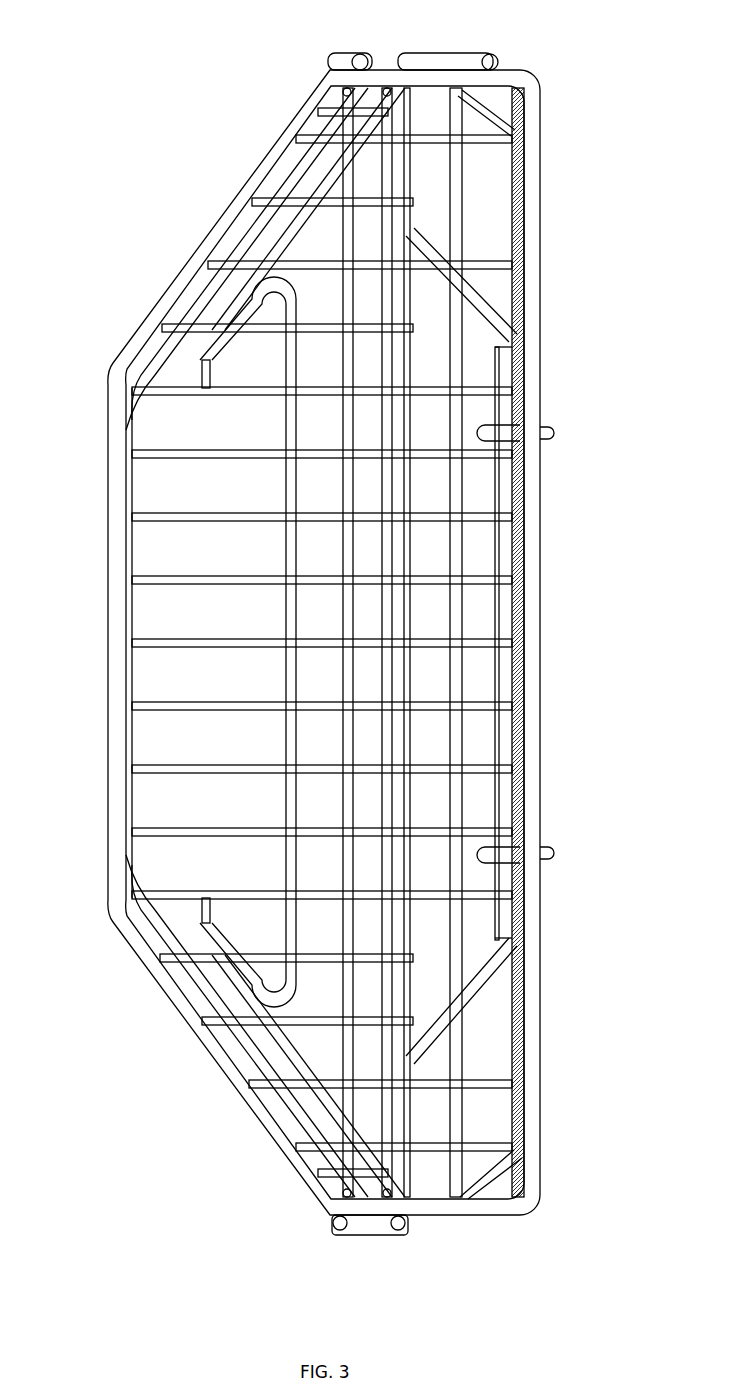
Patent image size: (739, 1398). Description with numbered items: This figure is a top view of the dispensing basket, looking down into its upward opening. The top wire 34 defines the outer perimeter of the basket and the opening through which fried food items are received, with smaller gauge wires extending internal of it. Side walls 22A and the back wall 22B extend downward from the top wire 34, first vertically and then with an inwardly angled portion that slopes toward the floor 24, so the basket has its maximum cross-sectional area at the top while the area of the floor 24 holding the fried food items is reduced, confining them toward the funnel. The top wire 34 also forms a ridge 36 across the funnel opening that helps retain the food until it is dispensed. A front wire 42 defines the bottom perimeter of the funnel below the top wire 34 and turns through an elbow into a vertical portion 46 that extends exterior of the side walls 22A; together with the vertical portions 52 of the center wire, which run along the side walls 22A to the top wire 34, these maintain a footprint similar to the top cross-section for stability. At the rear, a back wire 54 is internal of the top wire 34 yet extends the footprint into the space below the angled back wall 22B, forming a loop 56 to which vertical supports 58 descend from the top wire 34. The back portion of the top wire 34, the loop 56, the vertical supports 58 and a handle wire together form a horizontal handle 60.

The side walls 22A is at (370, 105).
The back wall 22B is at (484, 580).
The floor 24 is at (330, 686).
The top wire 34 is at (530, 234).
The ridge 36 is at (116, 528).
The front wire 42 is at (245, 1040).
The vertical portion 46 is at (362, 58).
The vertical portions 52 is at (496, 62).
The back wire 54 is at (415, 1110).
The loop 56 is at (503, 678).
The vertical supports 58 is at (548, 432).
The handle 60 is at (505, 1172).